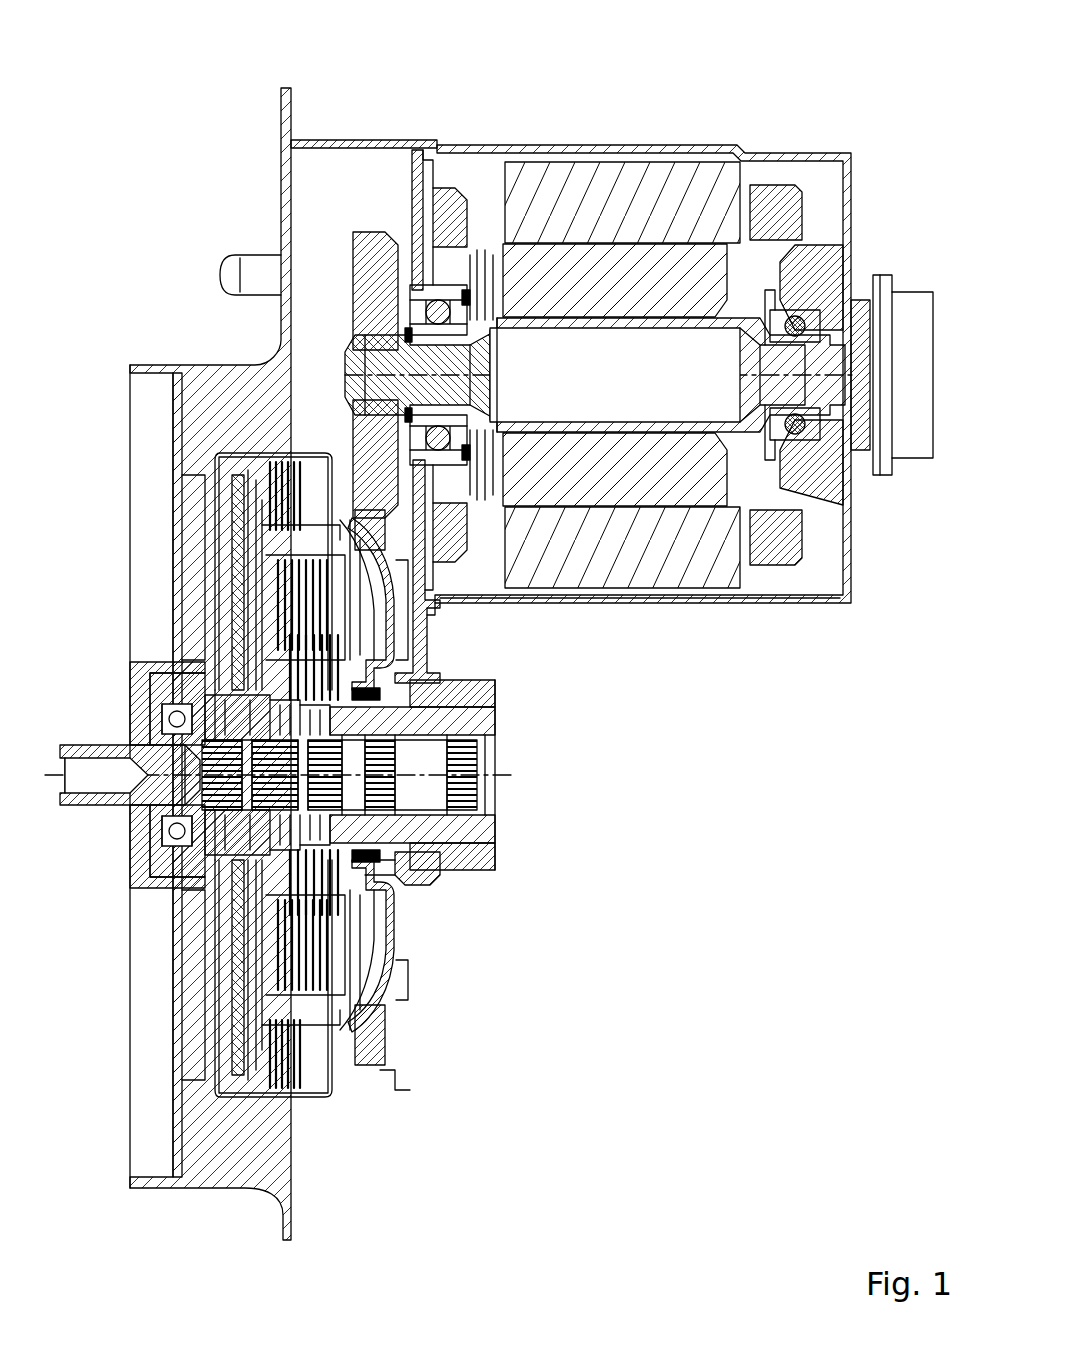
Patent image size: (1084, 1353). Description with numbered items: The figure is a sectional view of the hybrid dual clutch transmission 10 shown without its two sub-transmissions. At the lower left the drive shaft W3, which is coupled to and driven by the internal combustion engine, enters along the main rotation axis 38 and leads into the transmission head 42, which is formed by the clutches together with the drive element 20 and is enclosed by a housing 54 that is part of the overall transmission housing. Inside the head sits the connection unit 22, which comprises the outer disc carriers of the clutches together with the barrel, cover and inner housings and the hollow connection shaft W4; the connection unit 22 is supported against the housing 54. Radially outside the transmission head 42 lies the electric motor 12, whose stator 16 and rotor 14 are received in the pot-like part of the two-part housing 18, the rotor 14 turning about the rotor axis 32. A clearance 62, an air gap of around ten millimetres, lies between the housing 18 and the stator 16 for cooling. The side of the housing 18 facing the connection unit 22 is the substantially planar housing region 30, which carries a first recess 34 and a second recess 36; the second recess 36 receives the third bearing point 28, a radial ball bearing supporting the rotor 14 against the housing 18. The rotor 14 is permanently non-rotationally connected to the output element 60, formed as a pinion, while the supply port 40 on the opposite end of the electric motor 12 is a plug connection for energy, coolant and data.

The hybrid dual clutch transmission 10 is at (690, 920).
The electric motor 12 is at (652, 145).
The rotor 14 is at (612, 355).
The stator 16 is at (698, 172).
The housing 18 is at (797, 155).
The drive element 20 is at (372, 545).
The connection unit 22 is at (243, 440).
The third bearing point 28 is at (430, 285).
The housing region 30 is at (405, 190).
The rotor axis 32 is at (678, 385).
The first recess 34 is at (432, 882).
The second recess 36 is at (400, 367).
The main rotation axis 38 is at (105, 800).
The supply port 40 is at (920, 470).
The transmission head 42 is at (472, 1032).
The housing 54 is at (288, 175).
The output element 60 is at (350, 265).
The clearance 62 is at (690, 597).
The drive shaft W3 is at (88, 745).
The connection shaft W4 is at (460, 715).